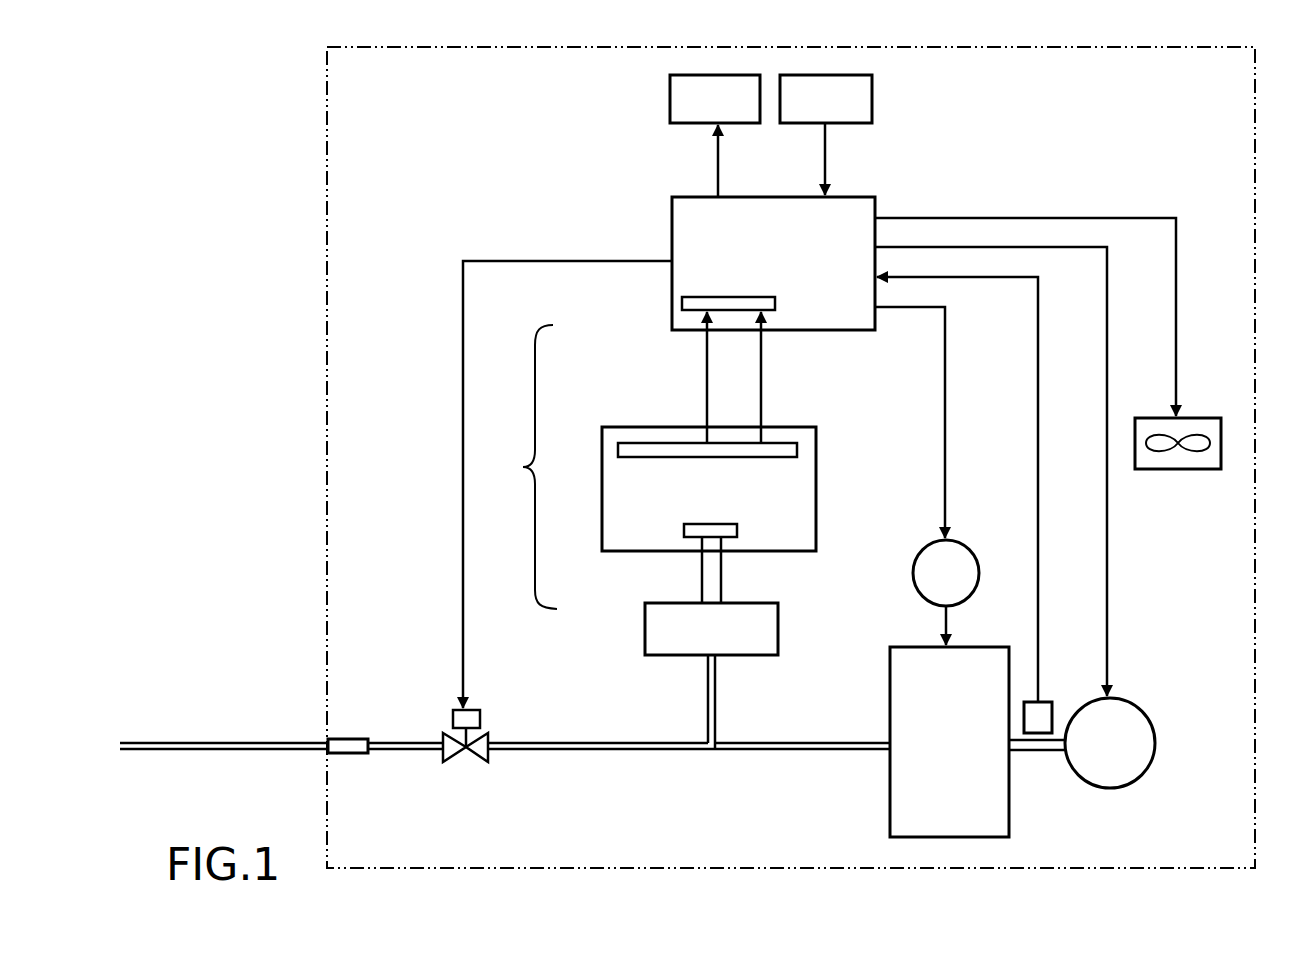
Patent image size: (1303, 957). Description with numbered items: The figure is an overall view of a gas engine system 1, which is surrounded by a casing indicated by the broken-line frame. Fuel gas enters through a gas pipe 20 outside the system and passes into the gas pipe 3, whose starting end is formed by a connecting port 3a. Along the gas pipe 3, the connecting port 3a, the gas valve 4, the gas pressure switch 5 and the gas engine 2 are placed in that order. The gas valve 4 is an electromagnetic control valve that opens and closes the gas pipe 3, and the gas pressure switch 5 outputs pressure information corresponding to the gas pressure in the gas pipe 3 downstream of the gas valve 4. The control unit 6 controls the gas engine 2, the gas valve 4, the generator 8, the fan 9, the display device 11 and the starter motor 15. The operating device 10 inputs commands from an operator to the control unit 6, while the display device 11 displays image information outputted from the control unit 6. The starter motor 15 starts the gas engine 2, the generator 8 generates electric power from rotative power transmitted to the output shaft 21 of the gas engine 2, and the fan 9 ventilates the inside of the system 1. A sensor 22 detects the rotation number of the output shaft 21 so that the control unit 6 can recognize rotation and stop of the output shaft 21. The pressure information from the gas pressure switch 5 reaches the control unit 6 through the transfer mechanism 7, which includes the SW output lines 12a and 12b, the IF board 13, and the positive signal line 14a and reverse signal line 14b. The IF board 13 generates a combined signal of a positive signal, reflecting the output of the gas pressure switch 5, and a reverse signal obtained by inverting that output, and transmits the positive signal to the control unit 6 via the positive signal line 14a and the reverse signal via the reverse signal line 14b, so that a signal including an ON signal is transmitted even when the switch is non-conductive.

The gas engine system 1 is at (327, 490).
The gas engine 2 is at (890, 692).
The gas pipe 3 is at (686, 751).
The connecting port 3a is at (348, 755).
The gas valve 4 is at (443, 735).
The gas pressure switch 5 is at (672, 656).
The control unit 6 is at (672, 227).
The transfer mechanism 7 is at (528, 467).
The generator 8 is at (1140, 699).
The fan 9 is at (1182, 470).
The operating device 10 is at (872, 90).
The display device 11 is at (670, 90).
The SW output line 12a is at (702, 563).
The SW output line 12b is at (721, 592).
The IF board 13 is at (602, 502).
The positive signal line 14a is at (707, 382).
The reverse signal line 14b is at (761, 350).
The starter motor 15 is at (972, 545).
The gas pipe 20 is at (253, 741).
The output shaft 21 is at (1027, 752).
The sensor 22 is at (1046, 700).